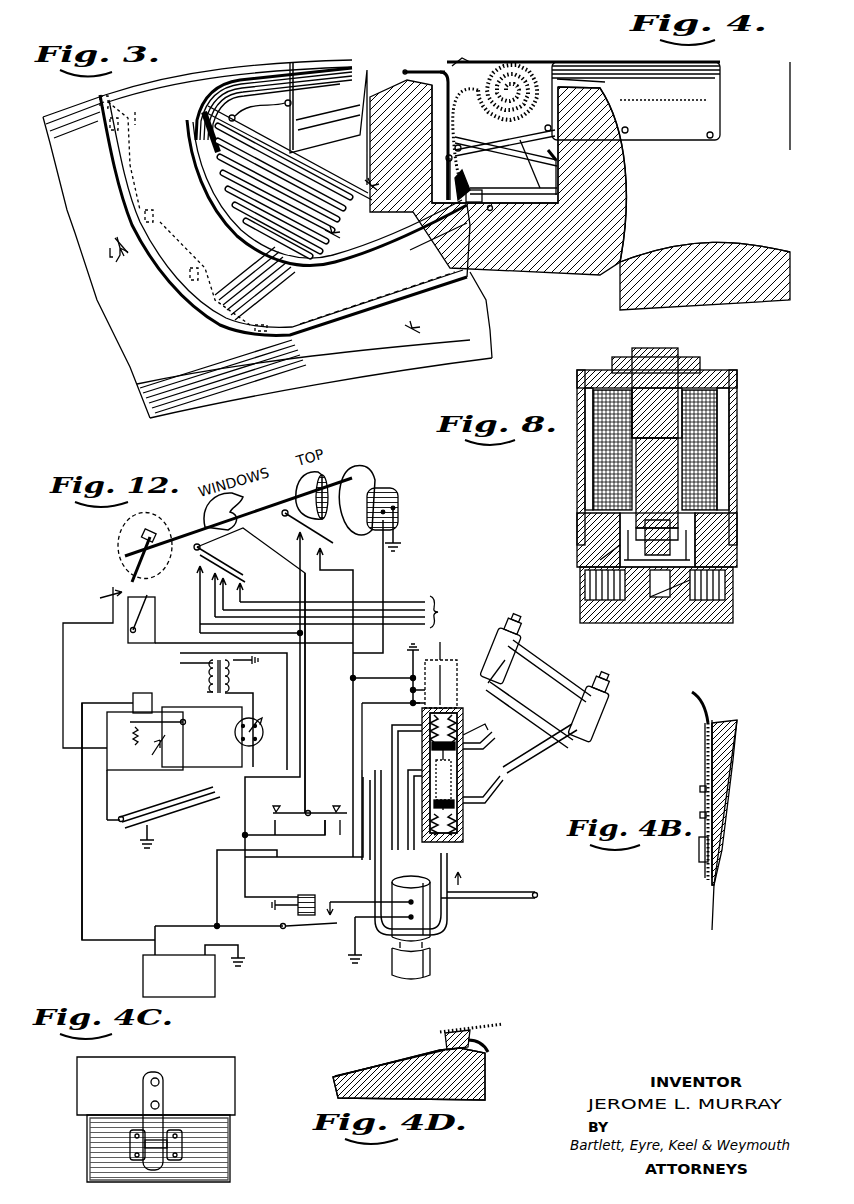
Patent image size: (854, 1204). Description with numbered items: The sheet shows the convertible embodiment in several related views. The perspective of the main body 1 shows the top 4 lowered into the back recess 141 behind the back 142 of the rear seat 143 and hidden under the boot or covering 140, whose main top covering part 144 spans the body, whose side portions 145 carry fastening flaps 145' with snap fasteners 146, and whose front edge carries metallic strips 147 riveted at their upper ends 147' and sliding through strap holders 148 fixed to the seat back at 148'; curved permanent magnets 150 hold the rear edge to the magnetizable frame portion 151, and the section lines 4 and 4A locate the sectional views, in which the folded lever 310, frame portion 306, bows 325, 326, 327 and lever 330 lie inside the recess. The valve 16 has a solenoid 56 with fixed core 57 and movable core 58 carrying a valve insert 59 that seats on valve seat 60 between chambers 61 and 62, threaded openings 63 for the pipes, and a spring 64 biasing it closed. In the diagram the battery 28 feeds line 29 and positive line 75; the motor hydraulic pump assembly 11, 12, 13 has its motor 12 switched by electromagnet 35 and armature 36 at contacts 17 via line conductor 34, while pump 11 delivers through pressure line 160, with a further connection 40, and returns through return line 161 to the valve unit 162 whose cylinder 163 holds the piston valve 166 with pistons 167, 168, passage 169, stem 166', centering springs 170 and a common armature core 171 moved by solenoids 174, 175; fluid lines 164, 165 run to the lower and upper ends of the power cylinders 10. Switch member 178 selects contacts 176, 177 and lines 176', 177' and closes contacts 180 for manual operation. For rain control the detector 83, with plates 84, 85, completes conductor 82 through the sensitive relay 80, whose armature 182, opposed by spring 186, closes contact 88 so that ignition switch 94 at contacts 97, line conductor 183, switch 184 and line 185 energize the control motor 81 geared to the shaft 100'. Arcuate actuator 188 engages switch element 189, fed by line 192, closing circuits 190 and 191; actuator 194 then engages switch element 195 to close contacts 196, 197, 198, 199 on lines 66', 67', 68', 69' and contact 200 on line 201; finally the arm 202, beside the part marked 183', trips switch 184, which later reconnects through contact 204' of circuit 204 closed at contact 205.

In FIG. 3, the main body 1 is at (490, 330).
In FIG. 3, the top 4 is at (240, 213).
In FIG. 4, the top 4 is at (460, 74).
In FIG. 4D, the top 4 is at (492, 1050).
In FIG. 3, the section line 4A is at (384, 279).
In FIG. 12, the power cylinder 10 is at (518, 628).
In FIG. 12, the pump 11 is at (432, 945).
In FIG. 12, the electric motor 12 is at (432, 912).
In FIG. 12, the motor hydraulic pump assembly 13 is at (432, 970).
In FIG. 8, the electrically operated valve 16 is at (572, 460).
In FIG. 12, the motor circuit contacts 17 is at (368, 932).
In FIG. 12, the battery 28 is at (216, 988).
In FIG. 12, the line 29 is at (215, 870).
In FIG. 12, the line conductor 34 is at (242, 875).
In FIG. 12, the electromagnet 35 is at (318, 896).
In FIG. 12, the armature 36 is at (305, 932).
In FIG. 12, the pressure line 40 is at (500, 892).
In FIG. 8, the solenoid 56 is at (718, 420).
In FIG. 8, the adjustable fixed core part 57 is at (662, 352).
In FIG. 8, the movable core part 58 is at (680, 478).
In FIG. 8, the valve insert 59 is at (682, 500).
In FIG. 8, the valve seat 60 is at (738, 553).
In FIG. 8, the chamber 61 is at (600, 555).
In FIG. 8, the chamber 62 is at (668, 598).
In FIG. 8, the threaded openings 63 is at (728, 585).
In FIG. 8, the spring 64 is at (690, 540).
In FIG. 12, the line 66' is at (332, 581).
In FIG. 12, the line 67' is at (327, 593).
In FIG. 12, the line 68' is at (338, 597).
In FIG. 12, the line 69' is at (352, 616).
In FIG. 12, the line conductor 75 is at (80, 830).
In FIG. 12, the sensitive relay 80 is at (136, 693).
In FIG. 12, the control motor 81 is at (394, 488).
In FIG. 12, the electrical conductor 82 is at (108, 796).
In FIG. 12, the rain drop control device 83 is at (185, 824).
In FIG. 12, the plate 84 is at (140, 840).
In FIG. 12, the plate 85 is at (142, 803).
In FIG. 12, the contact 88 is at (207, 686).
In FIG. 12, the ignition switch 94 is at (238, 738).
In FIG. 12, the contacts 97 is at (258, 718).
In FIG. 12, the shaft 100' is at (238, 516).
In FIG. 3, the boot or covering 140 is at (219, 59).
In FIG. 4, the boot or covering 140 is at (532, 54).
In FIG. 4, the back recess 141 is at (490, 212).
In FIG. 4D, the back recess 141 is at (488, 1082).
In FIG. 3, the back of rear seat 142 is at (255, 172).
In FIG. 4, the back of rear seat 142 is at (620, 168).
In FIG. 4, the rear seat 143 is at (700, 244).
In FIG. 3, the main top covering part 144 is at (324, 240).
In FIG. 4, the main top covering part 144 is at (478, 64).
In FIG. 4B, the main top covering part 144 is at (694, 705).
In FIG. 4C, the main top covering part 144 is at (178, 1058).
In FIG. 4D, the main top covering part 144 is at (490, 1024).
In FIG. 3, the side portion 145 is at (287, 186).
In FIG. 4, the side portion 145 is at (583, 58).
In FIG. 3, the fastening flap 145' is at (328, 124).
In FIG. 4, the fastening flap 145' is at (671, 106).
In FIG. 3, the fastening means 146 is at (260, 106).
In FIG. 4, the fastening means 146 is at (628, 127).
In FIG. 4, the metallic strip 147 is at (555, 145).
In FIG. 4B, the metallic strip 147 is at (678, 806).
In FIG. 4C, the metallic strip 147 is at (178, 1121).
In FIG. 4, the upper end of strip 147' is at (600, 75).
In FIG. 4B, the upper end of strip 147' is at (685, 773).
In FIG. 4C, the upper end of strip 147' is at (184, 1076).
In FIG. 4, the fastening means 148 is at (571, 173).
In FIG. 4B, the fastening means 148 is at (672, 850).
In FIG. 4C, the fastening means 148 is at (141, 1119).
In FIG. 4, the holder fastening 148' is at (533, 207).
In FIG. 4C, the holder fastening 148' is at (228, 1145).
In FIG. 3, the magnetic holder 150 is at (118, 122).
In FIG. 4, the magnetic holder 150 is at (450, 66).
In FIG. 4D, the magnetic holder 150 is at (445, 1038).
In FIG. 4, the magnetizable frame portion 151 is at (403, 68).
In FIG. 4D, the magnetizable frame portion 151 is at (440, 1046).
In FIG. 12, the hydraulic pressure line 160 is at (452, 862).
In FIG. 12, the return line 161 is at (373, 870).
In FIG. 12, the valve unit 162 is at (470, 808).
In FIG. 12, the cylinder 163 is at (495, 786).
In FIG. 12, the fluid line 164 is at (457, 716).
In FIG. 12, the fluid line 165 is at (540, 755).
In FIG. 12, the piston valve 166 is at (470, 780).
In FIG. 12, the stem 166' is at (398, 692).
In FIG. 12, the piston 167 is at (456, 740).
In FIG. 12, the piston 168 is at (465, 822).
In FIG. 12, the connecting passage 169 is at (470, 748).
In FIG. 12, the spring 170 is at (422, 722).
In FIG. 12, the armature core 171 is at (455, 668).
In FIG. 12, the solenoid 174 is at (461, 646).
In FIG. 12, the solenoid 175 is at (493, 672).
In FIG. 12, the switch contact 176 is at (340, 806).
In FIG. 12, the line 176' is at (330, 742).
In FIG. 12, the switch contact 177 is at (303, 817).
In FIG. 12, the line 177' is at (288, 872).
In FIG. 12, the switch member 178 is at (308, 790).
In FIG. 12, the contacts 180 is at (305, 835).
In FIG. 12, the movable armature 182 is at (183, 725).
In FIG. 12, the line conductor 183 is at (258, 711).
In FIG. 12, the cam follower 183' is at (172, 568).
In FIG. 12, the switch 184 is at (240, 619).
In FIG. 12, the line 185 is at (362, 650).
In FIG. 12, the spring 186 is at (130, 732).
In FIG. 12, the arcuate actuator 188 is at (315, 474).
In FIG. 12, the switch element 189 is at (338, 545).
In FIG. 12, the circuit 190 is at (352, 660).
In FIG. 12, the circuit 191 is at (316, 645).
In FIG. 12, the line conductor 192 is at (310, 705).
In FIG. 12, the arcuate actuator 194 is at (208, 518).
In FIG. 12, the switch element 195 is at (212, 556).
In FIG. 12, the contact 196 is at (247, 594).
In FIG. 12, the contact 197 is at (248, 587).
In FIG. 12, the contact 198 is at (233, 570).
In FIG. 12, the contact 199 is at (162, 618).
In FIG. 12, the contact 200 is at (160, 583).
In FIG. 12, the line 201 is at (198, 632).
In FIG. 12, the contact actuating arm 202 is at (128, 560).
In FIG. 12, the circuit 204 is at (81, 650).
In FIG. 12, the contact 204' is at (88, 667).
In FIG. 12, the contact 205 is at (158, 749).
In FIG. 4, the righthand portion 306 is at (663, 109).
In FIG. 4, the lever 310 is at (522, 164).
In FIG. 4, the bow 325 is at (455, 205).
In FIG. 4, the bow 326 is at (447, 158).
In FIG. 4, the bow 327 is at (513, 181).
In FIG. 4, the lever 330 is at (557, 200).